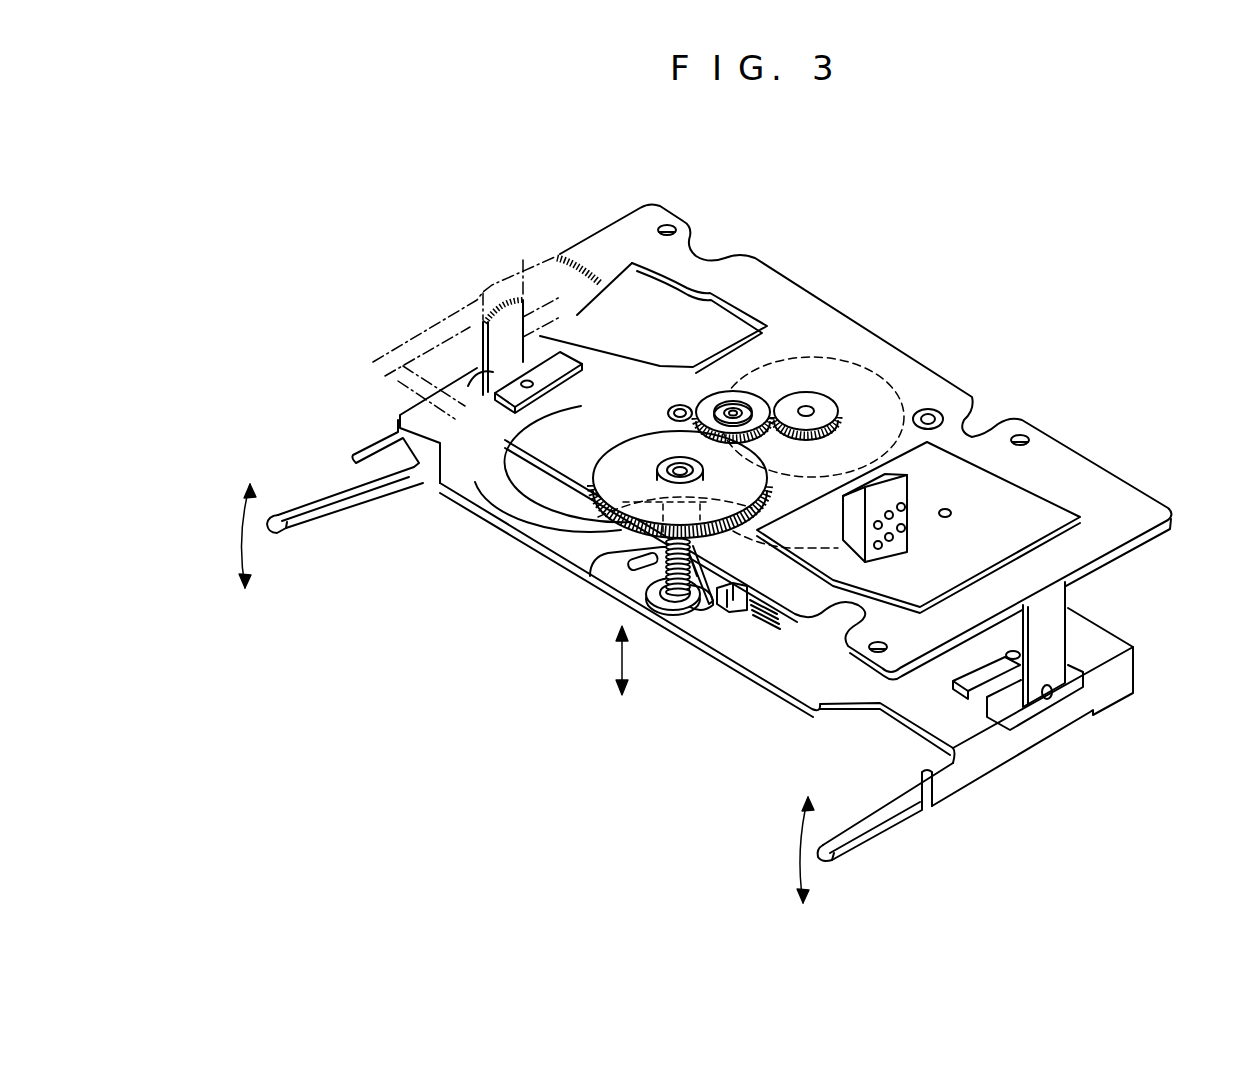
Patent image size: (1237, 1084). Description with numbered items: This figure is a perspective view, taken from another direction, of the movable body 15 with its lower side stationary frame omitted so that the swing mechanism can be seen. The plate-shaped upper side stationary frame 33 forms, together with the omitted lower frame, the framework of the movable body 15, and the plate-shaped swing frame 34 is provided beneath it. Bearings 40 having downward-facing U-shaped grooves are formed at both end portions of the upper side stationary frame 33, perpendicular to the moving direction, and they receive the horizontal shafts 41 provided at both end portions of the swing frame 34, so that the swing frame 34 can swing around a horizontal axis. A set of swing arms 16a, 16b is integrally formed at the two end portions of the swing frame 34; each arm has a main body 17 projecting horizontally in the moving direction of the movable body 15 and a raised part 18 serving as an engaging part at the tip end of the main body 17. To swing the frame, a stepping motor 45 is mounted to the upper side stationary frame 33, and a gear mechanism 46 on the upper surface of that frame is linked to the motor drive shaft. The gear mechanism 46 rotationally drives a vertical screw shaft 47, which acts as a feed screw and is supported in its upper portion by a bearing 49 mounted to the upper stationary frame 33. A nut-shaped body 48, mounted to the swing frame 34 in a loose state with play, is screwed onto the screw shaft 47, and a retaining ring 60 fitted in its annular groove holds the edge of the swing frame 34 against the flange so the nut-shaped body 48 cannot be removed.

The movable body 15 is at (988, 352).
The swing arm 16a is at (886, 843).
The swing arm 16b is at (317, 481).
The main body 17 is at (592, 658).
The raised part 18 is at (274, 536).
The upper side stationary frame 33 is at (897, 367).
The swing frame 34 is at (823, 677).
The bearing 40 is at (480, 340).
The shaft 41 is at (493, 372).
The stepping motor 45 is at (813, 560).
The gear mechanism 46 is at (768, 384).
The screw shaft 47 is at (620, 540).
The nut-shaped body 48 is at (648, 596).
The bearing 49 is at (598, 517).
The retaining ring 60 is at (647, 592).